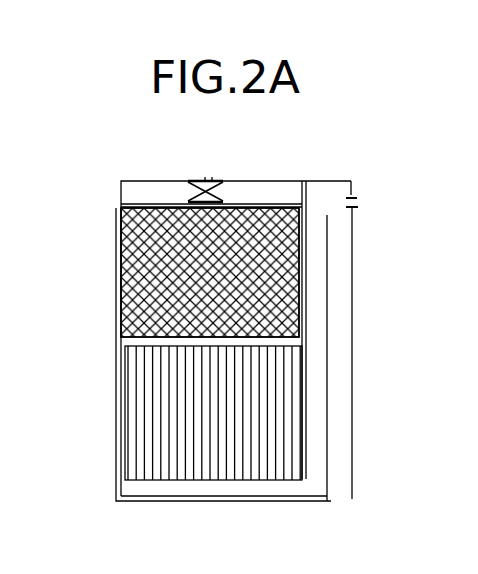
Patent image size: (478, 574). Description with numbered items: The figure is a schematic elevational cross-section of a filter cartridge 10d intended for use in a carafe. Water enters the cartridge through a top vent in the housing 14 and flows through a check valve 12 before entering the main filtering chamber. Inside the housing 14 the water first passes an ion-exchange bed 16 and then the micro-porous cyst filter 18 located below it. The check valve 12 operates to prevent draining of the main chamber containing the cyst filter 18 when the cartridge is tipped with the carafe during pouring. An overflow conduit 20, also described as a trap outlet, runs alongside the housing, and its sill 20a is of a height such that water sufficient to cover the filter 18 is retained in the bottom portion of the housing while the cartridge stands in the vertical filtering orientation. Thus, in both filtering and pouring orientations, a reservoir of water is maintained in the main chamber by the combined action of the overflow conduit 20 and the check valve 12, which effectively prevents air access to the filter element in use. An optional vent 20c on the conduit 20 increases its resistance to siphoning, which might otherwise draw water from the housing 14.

The filter cartridge 10d is at (218, 317).
The check valve 12 is at (218, 187).
The housing 14 is at (115, 273).
The ion-exchange bed 16 is at (122, 308).
The cyst filter 18 is at (140, 404).
The overflow conduit 20 is at (377, 317).
The sill 20a is at (328, 237).
The vent 20c is at (355, 208).